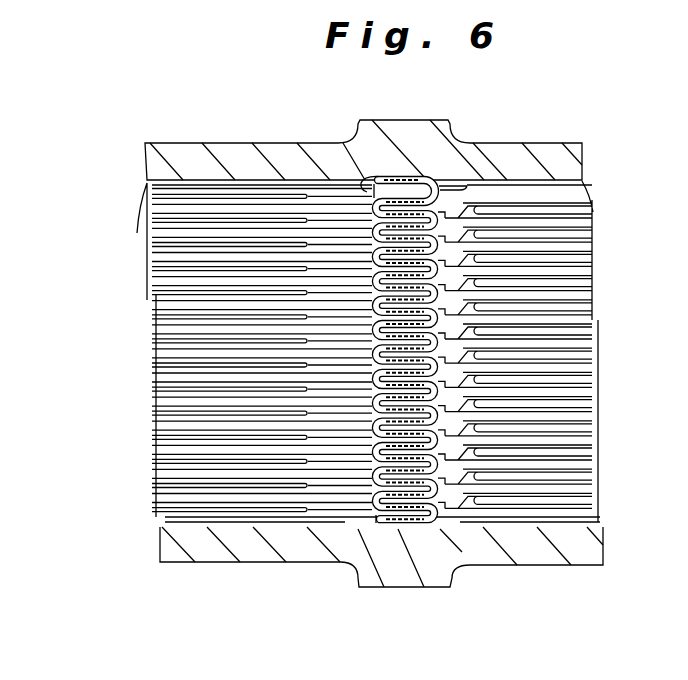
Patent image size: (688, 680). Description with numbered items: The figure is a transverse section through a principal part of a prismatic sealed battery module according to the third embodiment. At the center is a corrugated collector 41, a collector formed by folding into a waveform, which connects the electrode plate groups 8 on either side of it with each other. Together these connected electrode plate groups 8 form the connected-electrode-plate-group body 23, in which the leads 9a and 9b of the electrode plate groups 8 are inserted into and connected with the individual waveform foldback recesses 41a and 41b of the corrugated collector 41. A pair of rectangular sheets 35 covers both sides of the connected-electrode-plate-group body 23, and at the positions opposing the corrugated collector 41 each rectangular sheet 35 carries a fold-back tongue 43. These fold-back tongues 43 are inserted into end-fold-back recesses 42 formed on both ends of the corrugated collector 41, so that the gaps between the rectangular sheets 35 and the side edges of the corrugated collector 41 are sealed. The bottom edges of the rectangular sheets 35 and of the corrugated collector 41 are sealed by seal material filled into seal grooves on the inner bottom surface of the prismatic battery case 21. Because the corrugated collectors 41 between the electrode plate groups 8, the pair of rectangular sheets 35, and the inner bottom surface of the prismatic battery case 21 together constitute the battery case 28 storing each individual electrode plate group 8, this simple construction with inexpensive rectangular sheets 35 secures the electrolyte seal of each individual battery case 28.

The electrode plate group 8 is at (157, 358).
The lead 9a is at (351, 528).
The lead 9b is at (442, 533).
The prismatic battery case 21 is at (411, 147).
The connected-electrode-plate-group body 23 is at (128, 293).
The battery case 28 is at (320, 518).
The rectangular sheet 35 is at (293, 186).
The corrugated collector 41 is at (432, 215).
The waveform foldback recess 41a is at (357, 177).
The waveform foldback recess 41b is at (448, 189).
The end-fold-back recess 42 is at (367, 183).
The fold-back tongue 43 is at (415, 188).